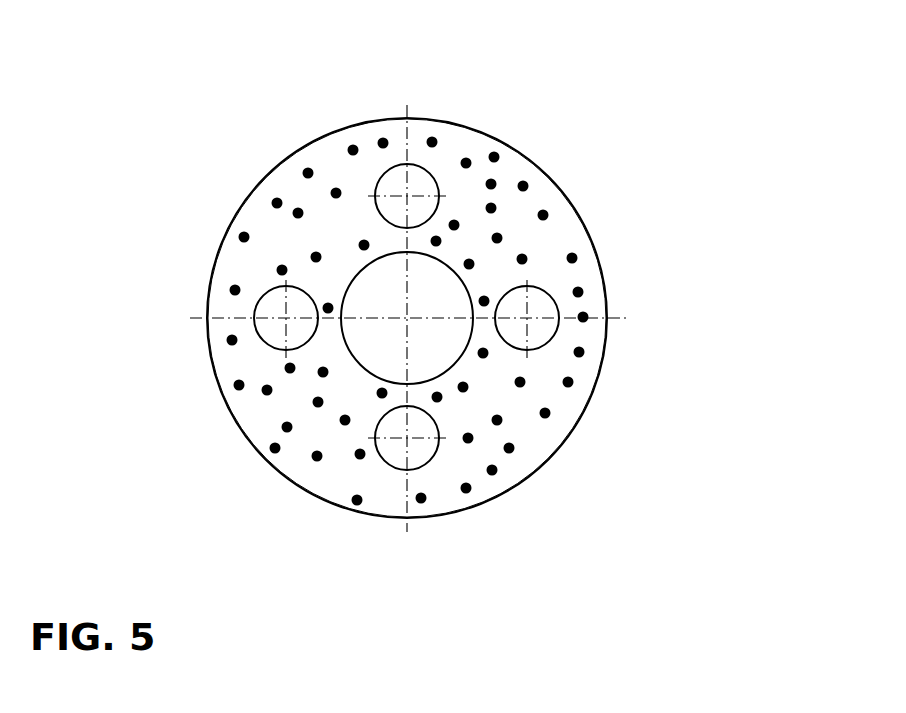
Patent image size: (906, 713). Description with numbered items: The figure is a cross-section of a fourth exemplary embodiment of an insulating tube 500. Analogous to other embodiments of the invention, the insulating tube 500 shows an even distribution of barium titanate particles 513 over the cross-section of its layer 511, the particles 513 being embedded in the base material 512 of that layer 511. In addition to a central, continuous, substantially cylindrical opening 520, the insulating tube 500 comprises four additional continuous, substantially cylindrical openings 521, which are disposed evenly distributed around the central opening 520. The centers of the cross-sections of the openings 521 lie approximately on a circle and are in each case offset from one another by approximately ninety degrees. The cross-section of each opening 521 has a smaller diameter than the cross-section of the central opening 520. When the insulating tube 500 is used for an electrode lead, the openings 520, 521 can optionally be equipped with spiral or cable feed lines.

The insulating tube 500 is at (446, 271).
The layer 511 is at (598, 263).
The base material 512 is at (595, 326).
The particle 513 is at (276, 205).
The opening 520 is at (360, 341).
The opening 521 is at (275, 318).